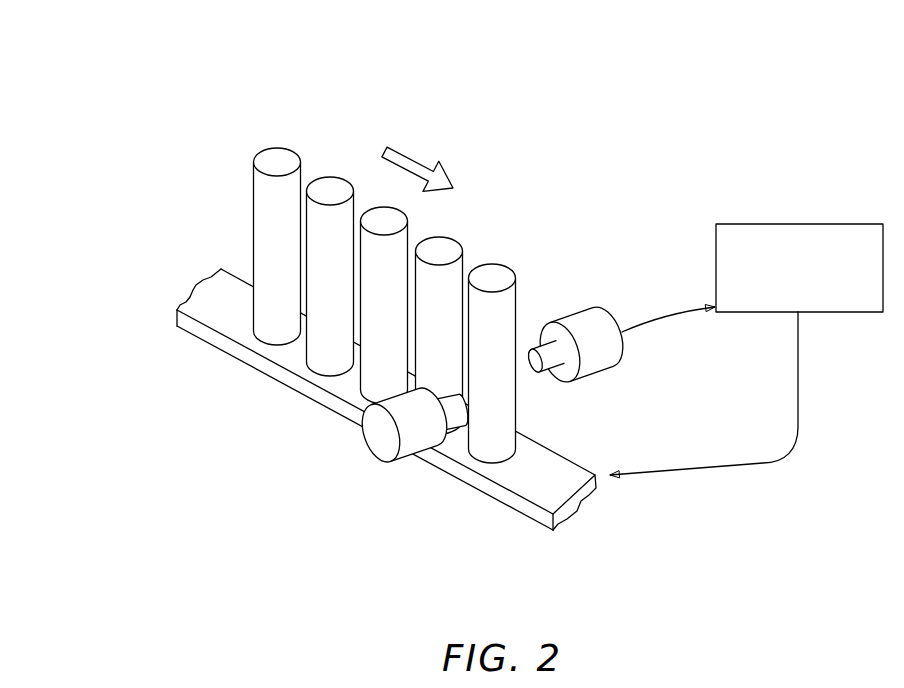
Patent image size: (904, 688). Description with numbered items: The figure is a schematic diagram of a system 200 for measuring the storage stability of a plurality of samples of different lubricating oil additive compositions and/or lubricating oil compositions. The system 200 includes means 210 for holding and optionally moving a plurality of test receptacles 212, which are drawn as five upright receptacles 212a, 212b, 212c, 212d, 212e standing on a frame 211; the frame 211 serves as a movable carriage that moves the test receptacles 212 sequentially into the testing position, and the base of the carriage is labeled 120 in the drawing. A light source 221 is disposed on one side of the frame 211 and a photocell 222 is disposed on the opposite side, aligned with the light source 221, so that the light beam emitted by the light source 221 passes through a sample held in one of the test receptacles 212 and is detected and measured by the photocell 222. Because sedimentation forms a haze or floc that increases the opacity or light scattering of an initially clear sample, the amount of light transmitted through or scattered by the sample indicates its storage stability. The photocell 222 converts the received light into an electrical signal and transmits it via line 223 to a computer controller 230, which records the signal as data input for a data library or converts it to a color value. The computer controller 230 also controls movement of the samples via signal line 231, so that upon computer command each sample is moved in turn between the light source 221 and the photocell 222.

The system 200 is at (212, 137).
The means for holding and optionally moving test receptacles 210 is at (192, 280).
The frame 211 is at (222, 352).
The substrate 120 is at (480, 504).
The test receptacles 212 is at (252, 147).
The first post 212a is at (508, 268).
The second post 212b is at (455, 240).
The third post 212c is at (370, 207).
The fourth post 212d is at (342, 177).
The fifth post 212e is at (287, 148).
The light source 221 is at (403, 458).
The photocell 222 is at (593, 374).
The line 223 is at (658, 315).
The computer controller 230 is at (780, 284).
The signal line 231 is at (800, 395).